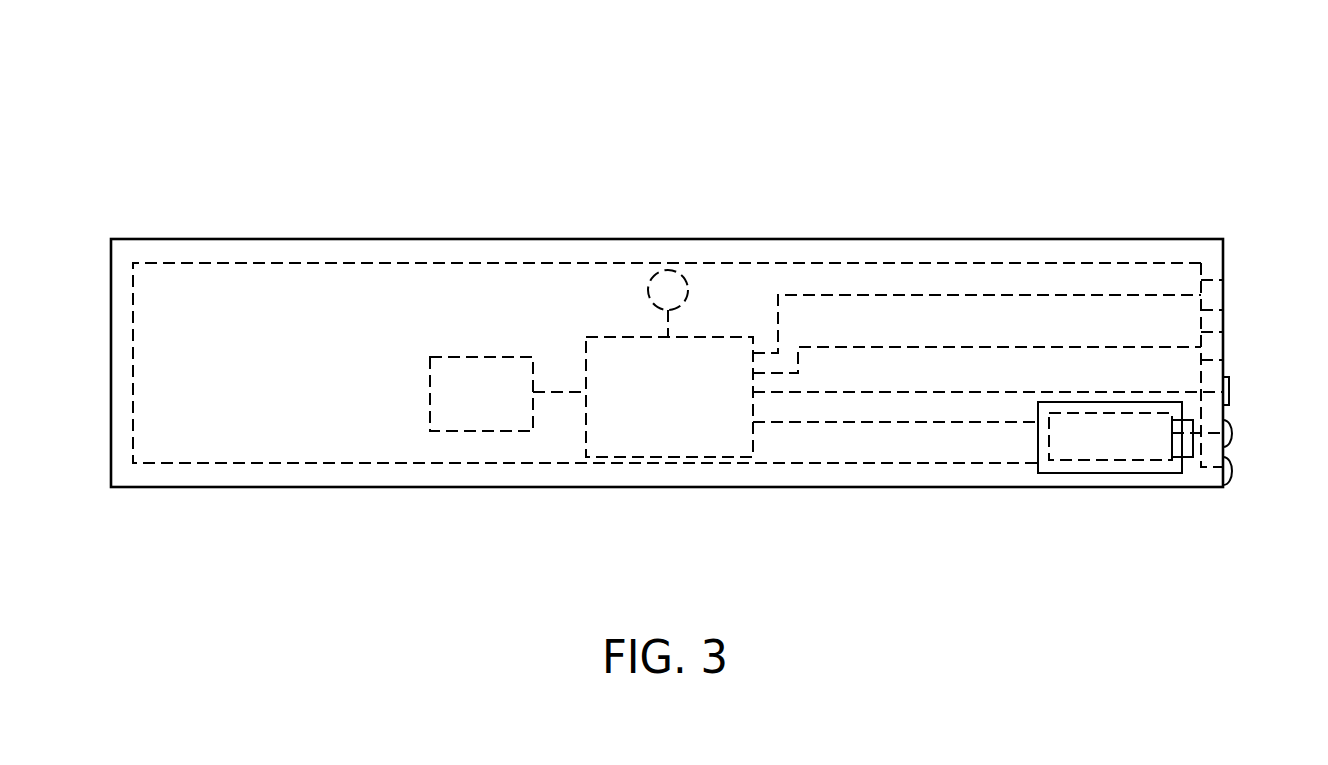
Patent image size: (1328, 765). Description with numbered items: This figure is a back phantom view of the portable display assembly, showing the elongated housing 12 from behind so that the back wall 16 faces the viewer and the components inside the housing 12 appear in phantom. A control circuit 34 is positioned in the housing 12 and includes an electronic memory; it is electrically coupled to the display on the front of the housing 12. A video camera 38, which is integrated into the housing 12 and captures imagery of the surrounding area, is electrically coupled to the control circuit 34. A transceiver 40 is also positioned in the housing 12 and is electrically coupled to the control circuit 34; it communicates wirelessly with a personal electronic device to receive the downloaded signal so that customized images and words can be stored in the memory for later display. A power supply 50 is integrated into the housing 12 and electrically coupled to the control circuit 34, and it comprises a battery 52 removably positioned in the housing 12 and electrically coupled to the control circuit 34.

The housing 12 is at (1223, 239).
The back wall 16 is at (258, 385).
The control circuit 34 is at (605, 337).
The video camera 38 is at (688, 292).
The transceiver 40 is at (475, 431).
The power supply 50 is at (1138, 465).
The battery 52 is at (1092, 460).